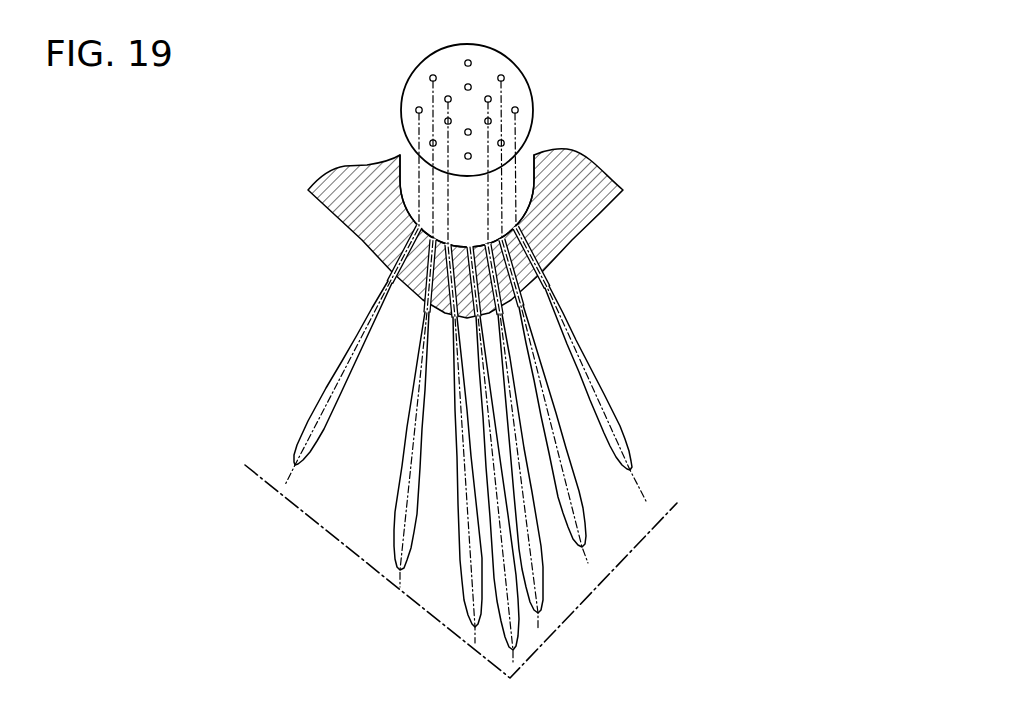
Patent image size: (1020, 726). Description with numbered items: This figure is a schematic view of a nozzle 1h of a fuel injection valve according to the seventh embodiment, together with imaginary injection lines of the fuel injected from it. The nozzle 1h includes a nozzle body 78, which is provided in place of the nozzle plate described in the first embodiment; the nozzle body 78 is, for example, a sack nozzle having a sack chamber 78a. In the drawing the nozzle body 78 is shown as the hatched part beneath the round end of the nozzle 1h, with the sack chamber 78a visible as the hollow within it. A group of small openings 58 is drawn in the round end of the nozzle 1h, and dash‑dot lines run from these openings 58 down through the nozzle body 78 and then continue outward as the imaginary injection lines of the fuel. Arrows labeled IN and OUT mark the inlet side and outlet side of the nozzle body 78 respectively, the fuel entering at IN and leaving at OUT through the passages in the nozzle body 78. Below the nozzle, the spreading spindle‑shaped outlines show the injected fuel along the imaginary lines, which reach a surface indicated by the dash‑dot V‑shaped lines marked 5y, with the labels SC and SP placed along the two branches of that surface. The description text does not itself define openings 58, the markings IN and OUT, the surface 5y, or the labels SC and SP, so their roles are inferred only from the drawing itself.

The nozzle 1h is at (538, 64).
The nozzle holes 58 is at (416, 109).
The nozzle body 78 is at (583, 207).
The sack chamber 78a is at (408, 186).
The inlet side IN is at (523, 175).
The outlet side OUT is at (571, 291).
The substrate surface 5y is at (287, 471).
The scan direction SC is at (345, 543).
The spray SP is at (628, 552).